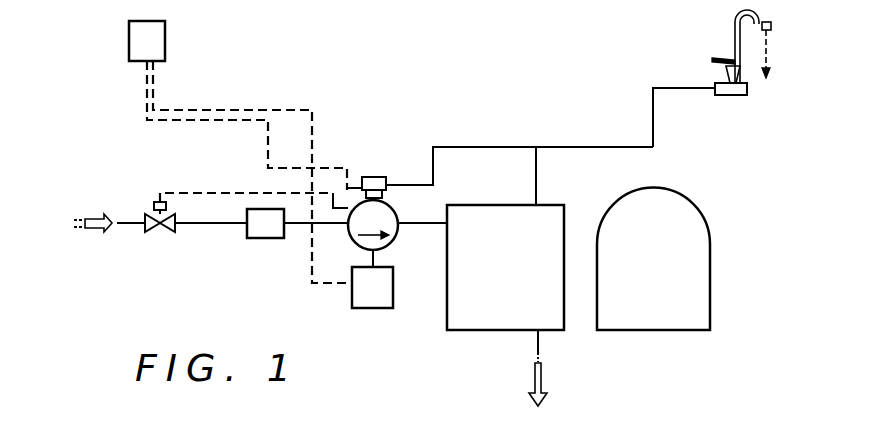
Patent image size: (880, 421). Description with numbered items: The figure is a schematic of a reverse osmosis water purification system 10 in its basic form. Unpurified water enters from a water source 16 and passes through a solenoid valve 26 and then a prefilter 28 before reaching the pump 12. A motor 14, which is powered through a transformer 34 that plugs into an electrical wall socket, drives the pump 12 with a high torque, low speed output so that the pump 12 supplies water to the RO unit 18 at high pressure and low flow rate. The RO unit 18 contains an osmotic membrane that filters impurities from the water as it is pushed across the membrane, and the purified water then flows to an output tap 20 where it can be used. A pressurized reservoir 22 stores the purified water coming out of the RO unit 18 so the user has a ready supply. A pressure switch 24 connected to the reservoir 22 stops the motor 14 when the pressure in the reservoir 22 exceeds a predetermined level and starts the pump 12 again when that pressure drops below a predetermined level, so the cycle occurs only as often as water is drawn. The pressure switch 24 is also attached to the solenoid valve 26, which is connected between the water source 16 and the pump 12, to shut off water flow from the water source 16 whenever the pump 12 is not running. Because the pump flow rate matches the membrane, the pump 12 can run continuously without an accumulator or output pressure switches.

The reverse osmosis water purification system 10 is at (390, 106).
The pump 12 is at (397, 233).
The motor 14 is at (372, 287).
The water source 16 is at (95, 233).
The RO unit 18 is at (505, 276).
The output tap 20 is at (734, 96).
The pressurized reservoir 22 is at (653, 259).
The pressure switch 24 is at (376, 179).
The solenoid valve 26 is at (158, 236).
The prefilter 28 is at (297, 223).
The transformer 34 is at (245, 152).